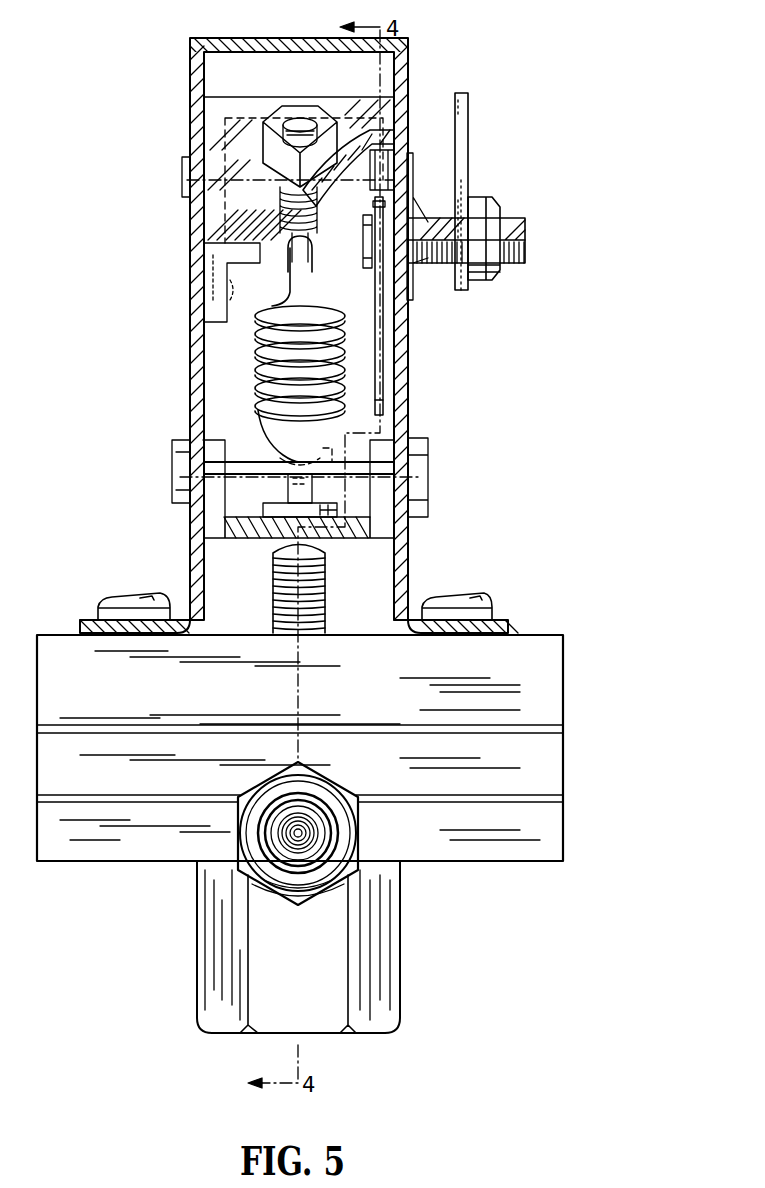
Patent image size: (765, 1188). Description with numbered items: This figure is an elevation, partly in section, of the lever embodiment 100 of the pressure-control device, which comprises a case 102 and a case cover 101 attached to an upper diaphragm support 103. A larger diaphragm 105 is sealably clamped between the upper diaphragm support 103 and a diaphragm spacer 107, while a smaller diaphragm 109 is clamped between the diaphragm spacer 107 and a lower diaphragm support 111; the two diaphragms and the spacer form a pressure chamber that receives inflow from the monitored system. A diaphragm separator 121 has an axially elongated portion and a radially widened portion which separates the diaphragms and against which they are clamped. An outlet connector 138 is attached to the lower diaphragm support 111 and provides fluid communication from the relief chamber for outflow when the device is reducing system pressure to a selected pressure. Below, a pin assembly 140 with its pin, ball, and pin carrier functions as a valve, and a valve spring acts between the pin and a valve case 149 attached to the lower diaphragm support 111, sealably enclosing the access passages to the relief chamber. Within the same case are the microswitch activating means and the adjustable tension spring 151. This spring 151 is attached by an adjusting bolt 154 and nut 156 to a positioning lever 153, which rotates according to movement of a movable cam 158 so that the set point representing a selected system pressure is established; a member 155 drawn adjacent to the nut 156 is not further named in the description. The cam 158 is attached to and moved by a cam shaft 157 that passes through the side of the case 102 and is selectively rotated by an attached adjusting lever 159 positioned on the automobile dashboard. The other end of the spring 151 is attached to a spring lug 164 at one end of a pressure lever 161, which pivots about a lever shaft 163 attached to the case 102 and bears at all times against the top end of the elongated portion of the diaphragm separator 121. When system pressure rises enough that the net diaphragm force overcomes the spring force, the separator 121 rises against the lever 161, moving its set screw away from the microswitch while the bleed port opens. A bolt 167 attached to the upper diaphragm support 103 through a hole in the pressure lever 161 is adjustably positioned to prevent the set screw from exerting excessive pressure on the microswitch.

The lever embodiment 100 is at (494, 401).
The case cover 101 is at (206, 42).
The case 102 is at (190, 76).
The upper diaphragm support 103 is at (553, 672).
The larger diaphragm 105 is at (562, 732).
The diaphragm spacer 107 is at (558, 770).
The smaller diaphragm 109 is at (558, 797).
The lower diaphragm support 111 is at (558, 843).
The diaphragm separator 121 is at (326, 600).
The outlet connector 138 is at (350, 831).
The pin assembly 140 is at (192, 993).
The valve case 149 is at (401, 960).
The adjustable tension spring 151 is at (256, 355).
The positioning lever 153 is at (226, 299).
The adjusting bolt 154 is at (300, 118).
The conductive strap 155 is at (359, 182).
The nut 156 is at (315, 110).
The cam shaft 157 is at (442, 264).
The movable cam 158 is at (376, 292).
The adjusting lever 159 is at (469, 121).
The pressure lever 161 is at (246, 540).
The lever shaft 163 is at (257, 460).
The spring lug 164 is at (313, 494).
The bolt 167 is at (270, 503).